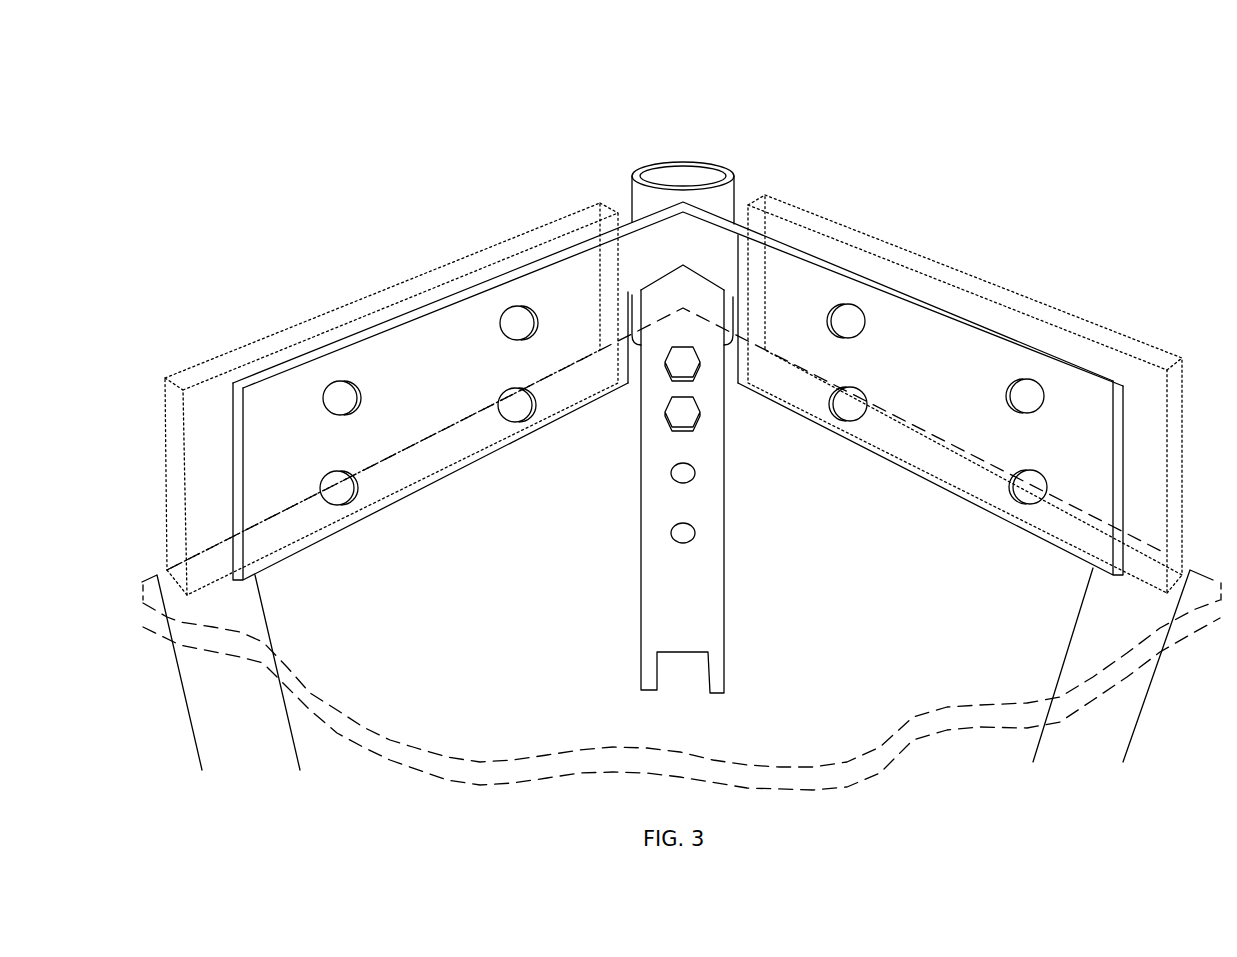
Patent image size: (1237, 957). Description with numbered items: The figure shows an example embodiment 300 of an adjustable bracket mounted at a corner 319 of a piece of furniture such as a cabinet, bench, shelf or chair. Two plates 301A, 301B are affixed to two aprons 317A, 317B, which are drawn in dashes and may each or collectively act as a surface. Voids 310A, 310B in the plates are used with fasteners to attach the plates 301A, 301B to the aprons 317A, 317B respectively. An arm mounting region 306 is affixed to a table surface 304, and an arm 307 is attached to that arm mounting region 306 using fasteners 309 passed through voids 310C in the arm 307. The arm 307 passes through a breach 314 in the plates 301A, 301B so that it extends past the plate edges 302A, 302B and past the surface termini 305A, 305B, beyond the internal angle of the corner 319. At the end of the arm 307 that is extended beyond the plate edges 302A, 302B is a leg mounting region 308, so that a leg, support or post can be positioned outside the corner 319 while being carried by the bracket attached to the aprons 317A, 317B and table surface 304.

The example embodiment 300 is at (224, 90).
The plate 301A is at (460, 413).
The plate 301B is at (969, 396).
The plate edge 302A is at (308, 678).
The plate edge 302B is at (1033, 671).
The table surface 304 is at (443, 653).
The surface terminus 305A is at (203, 678).
The surface terminus 305B is at (1142, 672).
The arm mounting region 306 is at (678, 684).
The arm 307 is at (702, 643).
The leg mounting region 308 is at (718, 204).
The fasteners 309 is at (680, 412).
The voids 310A is at (339, 486).
The voids 310B is at (1036, 483).
The voids 310C is at (681, 535).
The breach 314 is at (736, 353).
The apron 317A is at (286, 338).
The apron 317B is at (1143, 338).
The corner 319 is at (684, 308).